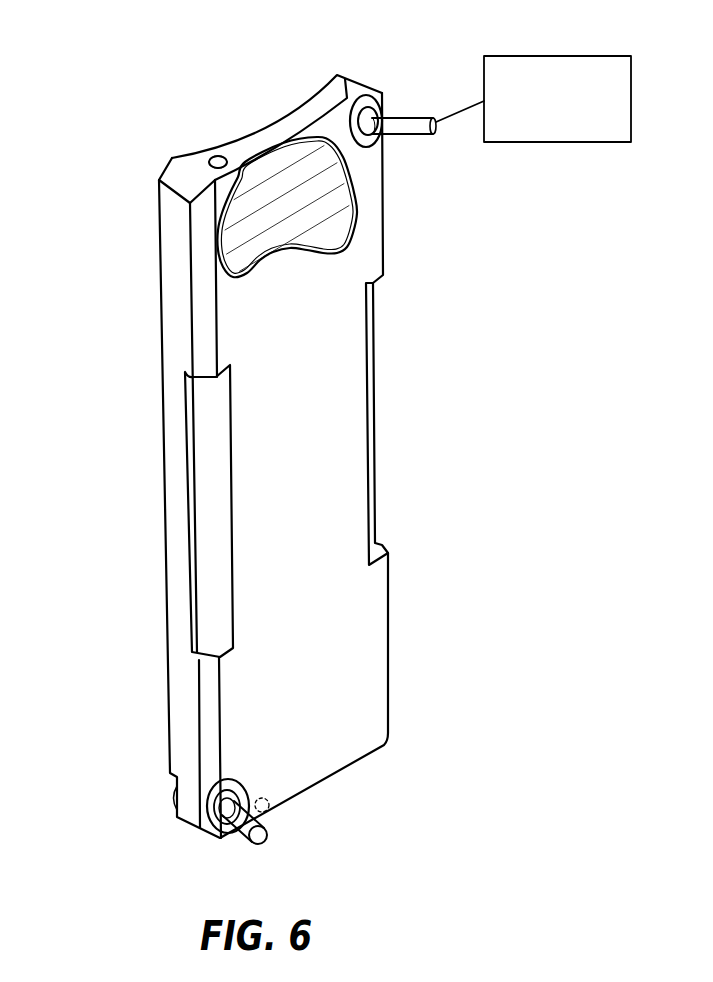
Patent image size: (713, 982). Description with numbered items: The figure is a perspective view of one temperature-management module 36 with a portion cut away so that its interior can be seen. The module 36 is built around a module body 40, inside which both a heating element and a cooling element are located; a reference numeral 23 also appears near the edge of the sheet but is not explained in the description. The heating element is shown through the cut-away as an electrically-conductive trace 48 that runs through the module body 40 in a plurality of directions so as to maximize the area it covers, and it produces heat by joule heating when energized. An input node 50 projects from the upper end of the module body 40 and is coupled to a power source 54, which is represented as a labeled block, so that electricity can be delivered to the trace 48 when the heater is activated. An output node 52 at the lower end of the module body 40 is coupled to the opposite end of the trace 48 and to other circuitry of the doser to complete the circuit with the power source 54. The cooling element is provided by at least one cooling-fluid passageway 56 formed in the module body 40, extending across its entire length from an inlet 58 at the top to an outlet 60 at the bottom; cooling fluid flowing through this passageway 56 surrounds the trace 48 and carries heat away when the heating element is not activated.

The temperature-management module 36 is at (257, 449).
The module body 40 is at (141, 172).
The electrically-conductive trace 48 is at (272, 158).
The input node 50 is at (418, 130).
The output node 52 is at (240, 833).
The power source 54 is at (631, 100).
The cooling-fluid passageway 56 is at (210, 155).
The inlet 58 is at (212, 155).
The outlet 60 is at (270, 810).
The component 23 is at (704, 436).